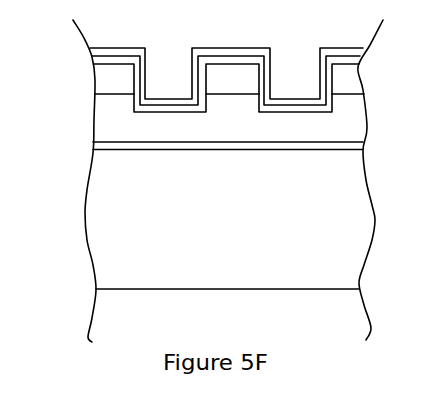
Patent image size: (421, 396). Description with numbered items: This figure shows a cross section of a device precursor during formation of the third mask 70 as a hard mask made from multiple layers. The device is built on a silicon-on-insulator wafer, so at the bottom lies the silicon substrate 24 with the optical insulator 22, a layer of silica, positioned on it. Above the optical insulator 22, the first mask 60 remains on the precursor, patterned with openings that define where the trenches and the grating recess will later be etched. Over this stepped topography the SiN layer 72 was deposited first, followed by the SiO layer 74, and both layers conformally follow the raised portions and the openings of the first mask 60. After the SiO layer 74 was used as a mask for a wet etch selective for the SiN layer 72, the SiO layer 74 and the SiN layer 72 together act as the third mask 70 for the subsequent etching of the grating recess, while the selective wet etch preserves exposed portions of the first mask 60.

The third mask 70 is at (82, 67).
The SiN layer 72 is at (150, 111).
The SiO layer 74 is at (113, 48).
The first mask 60 is at (238, 75).
The optical insulator 22 is at (120, 145).
The substrate 24 is at (120, 267).